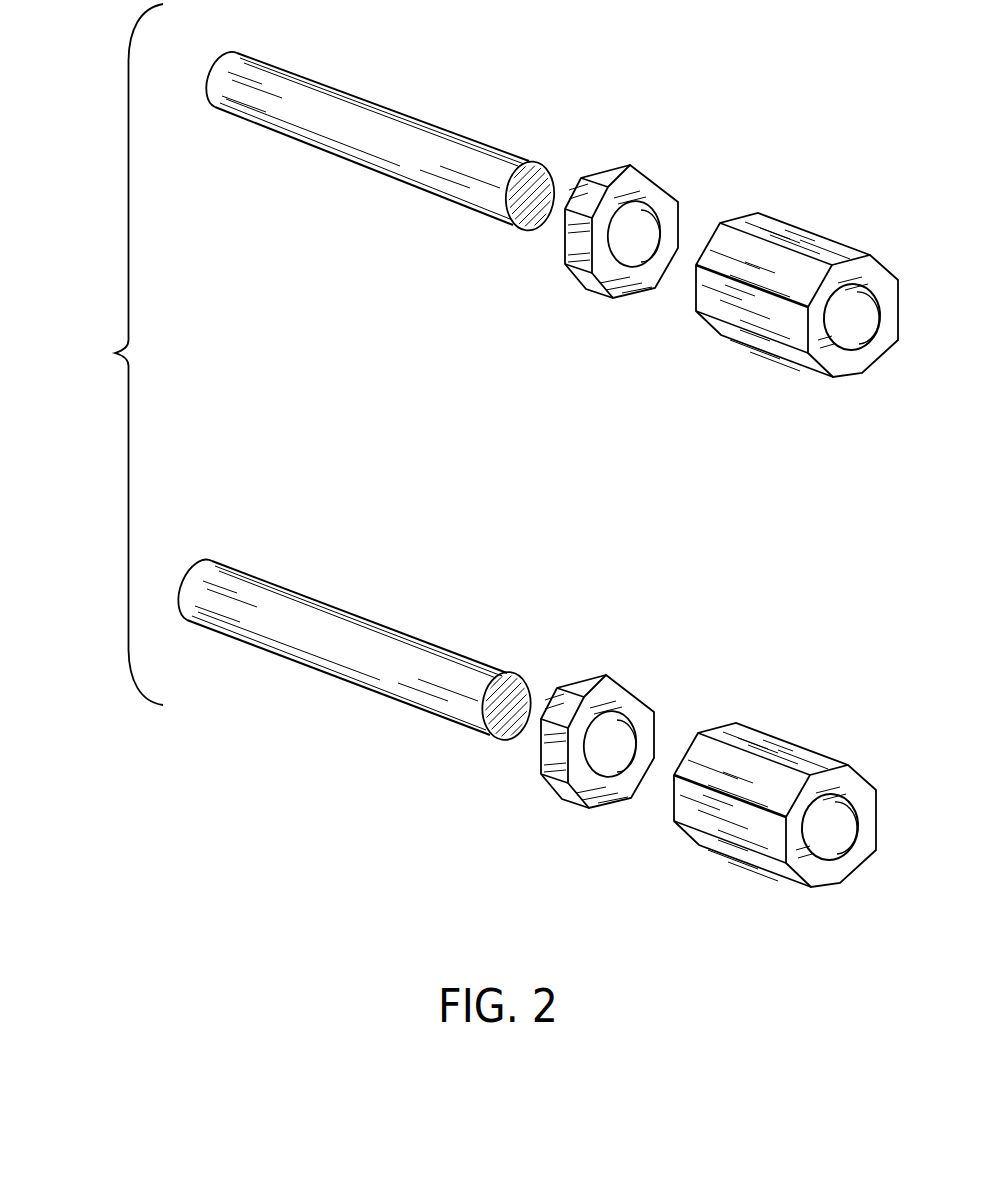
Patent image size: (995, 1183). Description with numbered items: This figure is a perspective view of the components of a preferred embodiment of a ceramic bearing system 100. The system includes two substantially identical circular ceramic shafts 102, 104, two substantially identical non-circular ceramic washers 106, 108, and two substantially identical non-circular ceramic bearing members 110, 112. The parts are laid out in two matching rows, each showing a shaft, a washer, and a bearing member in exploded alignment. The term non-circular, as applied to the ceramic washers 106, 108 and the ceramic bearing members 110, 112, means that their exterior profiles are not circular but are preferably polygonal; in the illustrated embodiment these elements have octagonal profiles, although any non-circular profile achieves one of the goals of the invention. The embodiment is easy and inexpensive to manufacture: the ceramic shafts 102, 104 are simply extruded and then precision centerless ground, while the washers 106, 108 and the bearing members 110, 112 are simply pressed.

The ceramic bearing system 100 is at (128, 393).
The circular ceramic shaft 102 is at (468, 190).
The circular ceramic shaft 104 is at (367, 668).
The non-circular ceramic washer 106 is at (585, 287).
The non-circular ceramic washer 108 is at (562, 800).
The non-circular ceramic bearing member 110 is at (803, 233).
The non-circular ceramic bearing member 112 is at (778, 738).